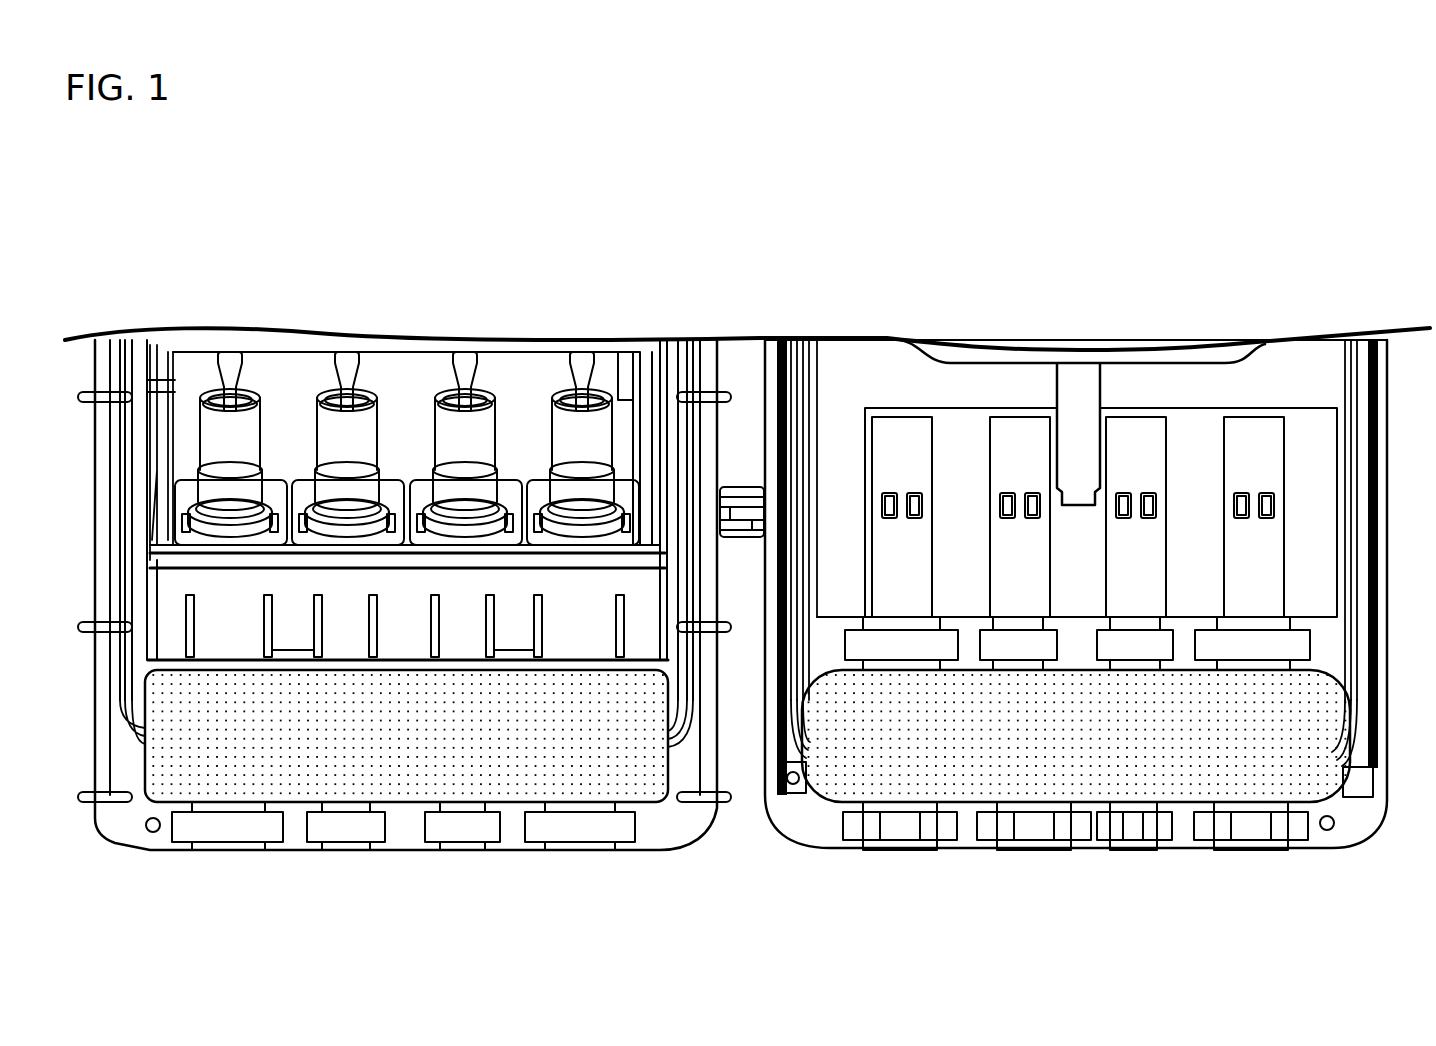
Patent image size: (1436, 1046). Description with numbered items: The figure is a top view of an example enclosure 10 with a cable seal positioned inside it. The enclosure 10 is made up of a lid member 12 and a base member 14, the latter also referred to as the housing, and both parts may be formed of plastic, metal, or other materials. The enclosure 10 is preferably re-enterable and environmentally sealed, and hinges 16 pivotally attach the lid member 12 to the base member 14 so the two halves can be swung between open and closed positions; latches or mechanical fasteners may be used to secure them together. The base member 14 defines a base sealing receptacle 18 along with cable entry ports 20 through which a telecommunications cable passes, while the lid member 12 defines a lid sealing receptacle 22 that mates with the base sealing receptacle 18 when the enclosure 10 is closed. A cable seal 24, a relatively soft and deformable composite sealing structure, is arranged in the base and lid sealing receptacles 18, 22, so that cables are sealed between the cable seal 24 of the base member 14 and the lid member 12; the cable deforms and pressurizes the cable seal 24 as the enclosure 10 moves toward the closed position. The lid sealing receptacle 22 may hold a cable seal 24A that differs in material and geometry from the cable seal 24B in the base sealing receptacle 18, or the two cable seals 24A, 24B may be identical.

The enclosure 10 is at (148, 243).
The lid member 12 is at (685, 838).
The base member 14 is at (1367, 833).
The hinges 16 is at (749, 458).
The base sealing receptacle 18 is at (1337, 670).
The cable entry ports 20 is at (897, 868).
The lid sealing receptacle 22 is at (140, 802).
The cable seal 24 is at (288, 802).
The cable seal 24A is at (403, 802).
The cable seal 24B is at (1071, 802).